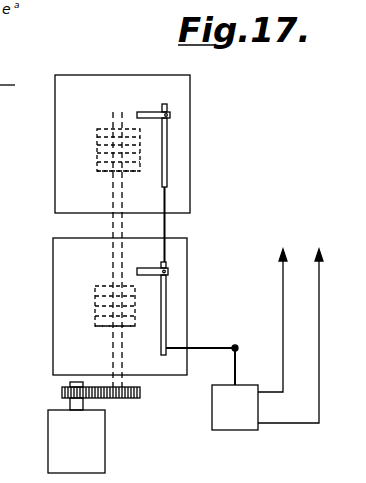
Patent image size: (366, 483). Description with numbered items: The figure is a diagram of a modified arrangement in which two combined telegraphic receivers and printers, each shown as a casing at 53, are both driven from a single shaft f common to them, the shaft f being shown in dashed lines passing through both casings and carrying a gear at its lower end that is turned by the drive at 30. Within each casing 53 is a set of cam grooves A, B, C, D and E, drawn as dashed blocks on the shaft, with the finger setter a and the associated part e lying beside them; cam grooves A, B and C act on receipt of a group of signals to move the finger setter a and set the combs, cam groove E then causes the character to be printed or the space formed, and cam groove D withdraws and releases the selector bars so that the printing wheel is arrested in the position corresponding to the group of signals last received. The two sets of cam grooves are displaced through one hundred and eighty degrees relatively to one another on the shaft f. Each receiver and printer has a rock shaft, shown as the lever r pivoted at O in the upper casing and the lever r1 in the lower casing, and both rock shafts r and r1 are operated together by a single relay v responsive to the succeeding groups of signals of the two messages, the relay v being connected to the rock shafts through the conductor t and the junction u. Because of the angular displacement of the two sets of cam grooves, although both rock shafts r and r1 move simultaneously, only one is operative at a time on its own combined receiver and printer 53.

The combined receiver and printer 53 is at (121, 225).
The motor 30 is at (76, 427).
The finger setter a is at (108, 249).
The cam groove A is at (97, 148).
The cam groove B is at (97, 166).
The cam groove C is at (97, 130).
The cam groove D is at (97, 140).
The cam groove E is at (97, 156).
The armature core e is at (131, 174).
The lever pivot O is at (145, 113).
The rock shaft r is at (170, 139).
The rock shaft r1 is at (166, 301).
The driving shaft f is at (130, 398).
The conductor t is at (217, 350).
The junction u is at (237, 367).
The relay v is at (240, 413).